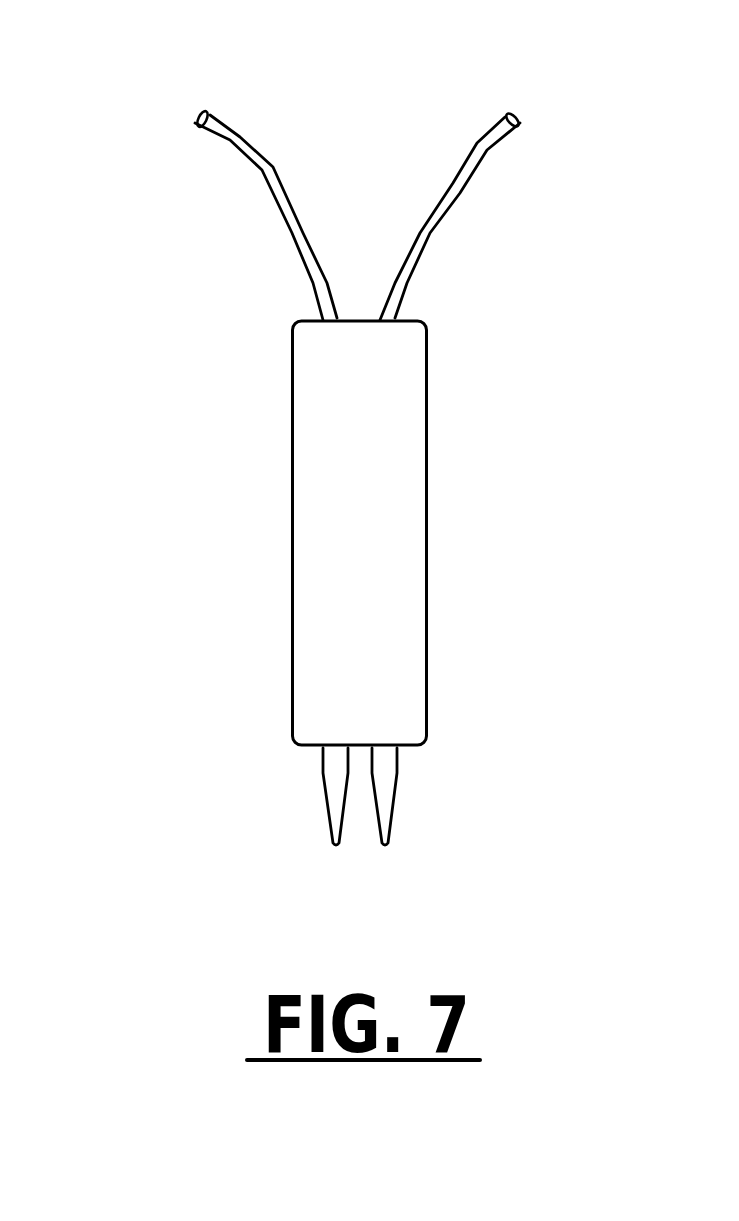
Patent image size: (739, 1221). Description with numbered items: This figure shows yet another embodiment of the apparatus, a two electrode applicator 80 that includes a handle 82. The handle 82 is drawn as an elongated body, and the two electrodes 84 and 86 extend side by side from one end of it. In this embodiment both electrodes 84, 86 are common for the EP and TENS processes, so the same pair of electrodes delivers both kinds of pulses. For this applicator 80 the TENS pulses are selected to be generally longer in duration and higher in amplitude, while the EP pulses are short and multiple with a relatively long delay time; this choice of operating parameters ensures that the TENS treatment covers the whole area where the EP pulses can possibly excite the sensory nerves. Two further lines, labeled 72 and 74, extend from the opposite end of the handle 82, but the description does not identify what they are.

The first lead wire 72 is at (262, 170).
The second lead wire 74 is at (478, 142).
The two electrode applicator 80 is at (212, 560).
The handle 82 is at (398, 485).
The electrode 84 is at (330, 800).
The electrode 86 is at (395, 790).